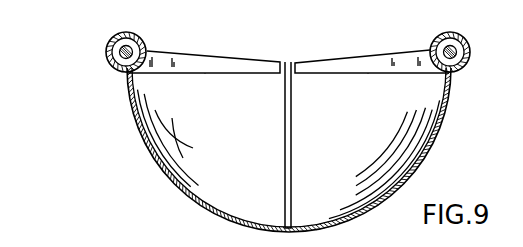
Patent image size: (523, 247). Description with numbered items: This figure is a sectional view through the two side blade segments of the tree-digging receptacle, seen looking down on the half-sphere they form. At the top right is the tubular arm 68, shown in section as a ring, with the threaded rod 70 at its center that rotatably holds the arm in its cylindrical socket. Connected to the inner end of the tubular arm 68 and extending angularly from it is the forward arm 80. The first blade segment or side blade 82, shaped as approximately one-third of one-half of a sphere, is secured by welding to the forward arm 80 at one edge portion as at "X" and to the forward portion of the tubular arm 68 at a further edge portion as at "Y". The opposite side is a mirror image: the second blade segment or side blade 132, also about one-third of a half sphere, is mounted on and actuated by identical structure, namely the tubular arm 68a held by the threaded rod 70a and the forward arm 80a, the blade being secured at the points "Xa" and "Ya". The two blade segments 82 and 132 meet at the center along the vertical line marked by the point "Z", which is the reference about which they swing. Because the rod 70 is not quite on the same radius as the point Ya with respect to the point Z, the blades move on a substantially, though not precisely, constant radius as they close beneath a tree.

The tubular arm 68a is at (107, 47).
The threaded rod 70 is at (128, 46).
The forward arm 80a is at (190, 63).
The forward arm 80 is at (375, 63).
The threaded rod 70a is at (450, 45).
The tubular arm 68 is at (468, 45).
The first blade segment 82 is at (422, 123).
The second blade segment 132 is at (210, 193).
The point Z is at (287, 62).
The securing location X is at (368, 75).
The securing location Xa is at (204, 74).
The securing location Y is at (453, 73).
The point Ya is at (125, 75).